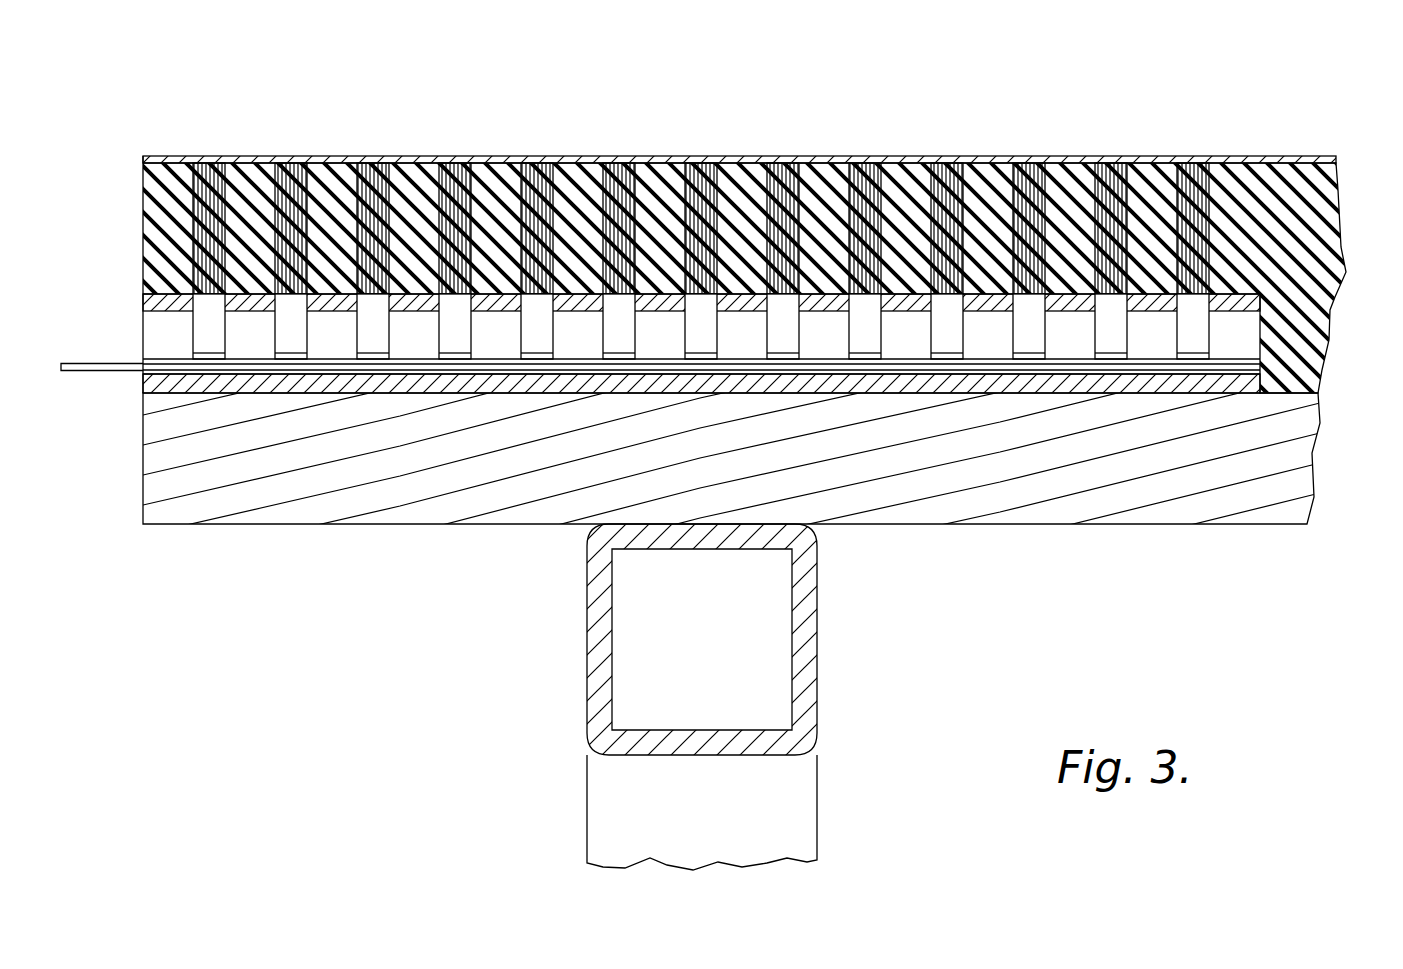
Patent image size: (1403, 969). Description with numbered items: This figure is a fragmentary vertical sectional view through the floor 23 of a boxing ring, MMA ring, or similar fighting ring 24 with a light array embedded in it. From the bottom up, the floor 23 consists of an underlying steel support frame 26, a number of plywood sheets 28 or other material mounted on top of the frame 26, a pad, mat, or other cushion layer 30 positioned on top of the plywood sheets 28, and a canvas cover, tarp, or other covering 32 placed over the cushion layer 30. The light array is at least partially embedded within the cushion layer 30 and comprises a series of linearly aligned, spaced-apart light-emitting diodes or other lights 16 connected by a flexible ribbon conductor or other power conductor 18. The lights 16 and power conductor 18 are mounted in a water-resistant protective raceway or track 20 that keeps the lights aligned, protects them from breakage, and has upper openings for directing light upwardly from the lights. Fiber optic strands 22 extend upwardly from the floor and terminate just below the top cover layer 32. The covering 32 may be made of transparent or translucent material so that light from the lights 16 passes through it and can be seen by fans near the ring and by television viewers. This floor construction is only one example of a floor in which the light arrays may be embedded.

The lights 16 is at (287, 323).
The power conductor 18 is at (103, 367).
The raceway or track 20 is at (150, 302).
The fiber optic strands 22 is at (207, 177).
The floor 23 is at (1355, 160).
The fighting ring 24 is at (1124, 117).
The steel support frame 26 is at (805, 628).
The plywood sheets 28 is at (1078, 505).
The cushion layer 30 is at (1313, 342).
The covering 32 is at (915, 158).